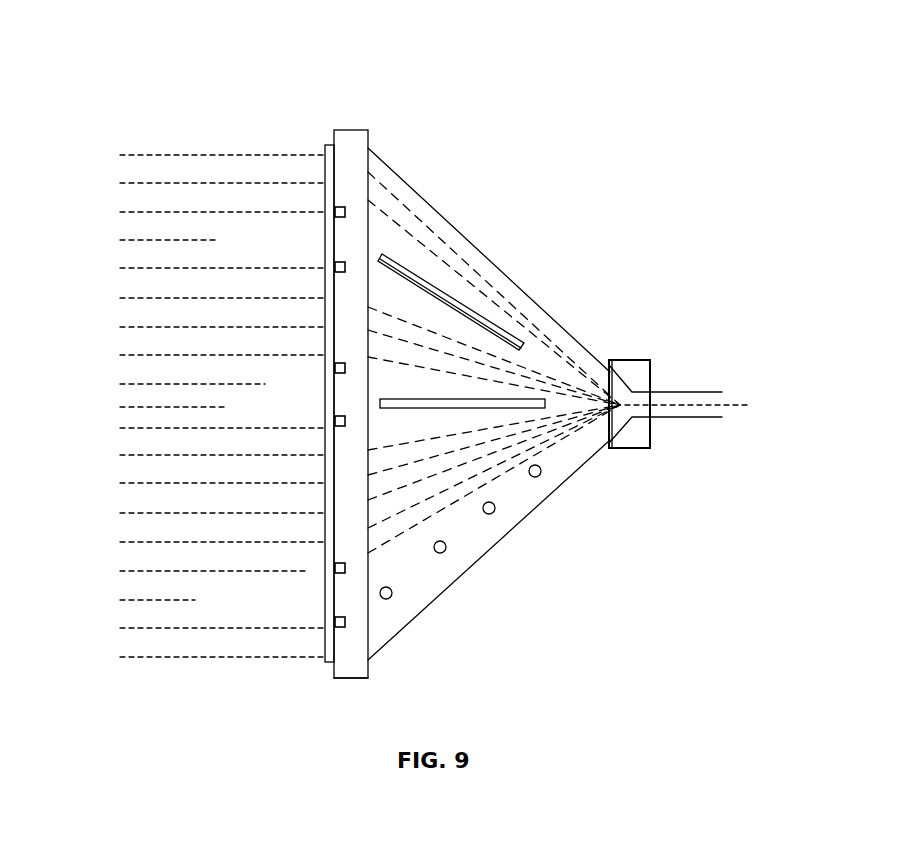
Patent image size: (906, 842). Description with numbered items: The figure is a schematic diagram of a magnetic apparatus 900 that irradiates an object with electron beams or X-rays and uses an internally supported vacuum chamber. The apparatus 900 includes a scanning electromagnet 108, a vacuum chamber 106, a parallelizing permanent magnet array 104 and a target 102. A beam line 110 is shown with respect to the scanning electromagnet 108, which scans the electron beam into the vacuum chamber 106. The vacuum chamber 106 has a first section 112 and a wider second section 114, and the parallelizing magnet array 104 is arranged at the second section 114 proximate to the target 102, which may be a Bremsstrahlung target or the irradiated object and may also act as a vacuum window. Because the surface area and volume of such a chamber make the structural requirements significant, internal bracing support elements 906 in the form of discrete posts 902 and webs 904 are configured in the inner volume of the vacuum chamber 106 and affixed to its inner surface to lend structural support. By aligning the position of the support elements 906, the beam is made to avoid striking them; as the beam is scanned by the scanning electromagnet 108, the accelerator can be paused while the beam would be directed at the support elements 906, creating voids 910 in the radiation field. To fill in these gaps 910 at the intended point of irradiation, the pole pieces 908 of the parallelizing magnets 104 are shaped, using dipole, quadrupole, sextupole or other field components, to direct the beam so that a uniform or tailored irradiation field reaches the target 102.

The magnetic apparatus 900 is at (533, 30).
The target 102 is at (325, 170).
The parallelizing permanent magnet array 104 is at (372, 128).
The vacuum chamber 106 is at (492, 265).
The scanning electromagnet 108 is at (652, 360).
The beam line 110 is at (720, 414).
The first section 112 is at (627, 442).
The second section 114 is at (347, 680).
The discrete posts 902 is at (432, 276).
The webs 904 is at (498, 516).
The internal bracing support elements 906 is at (534, 326).
The pole pieces 908 is at (325, 212).
The voids 910 is at (399, 229).